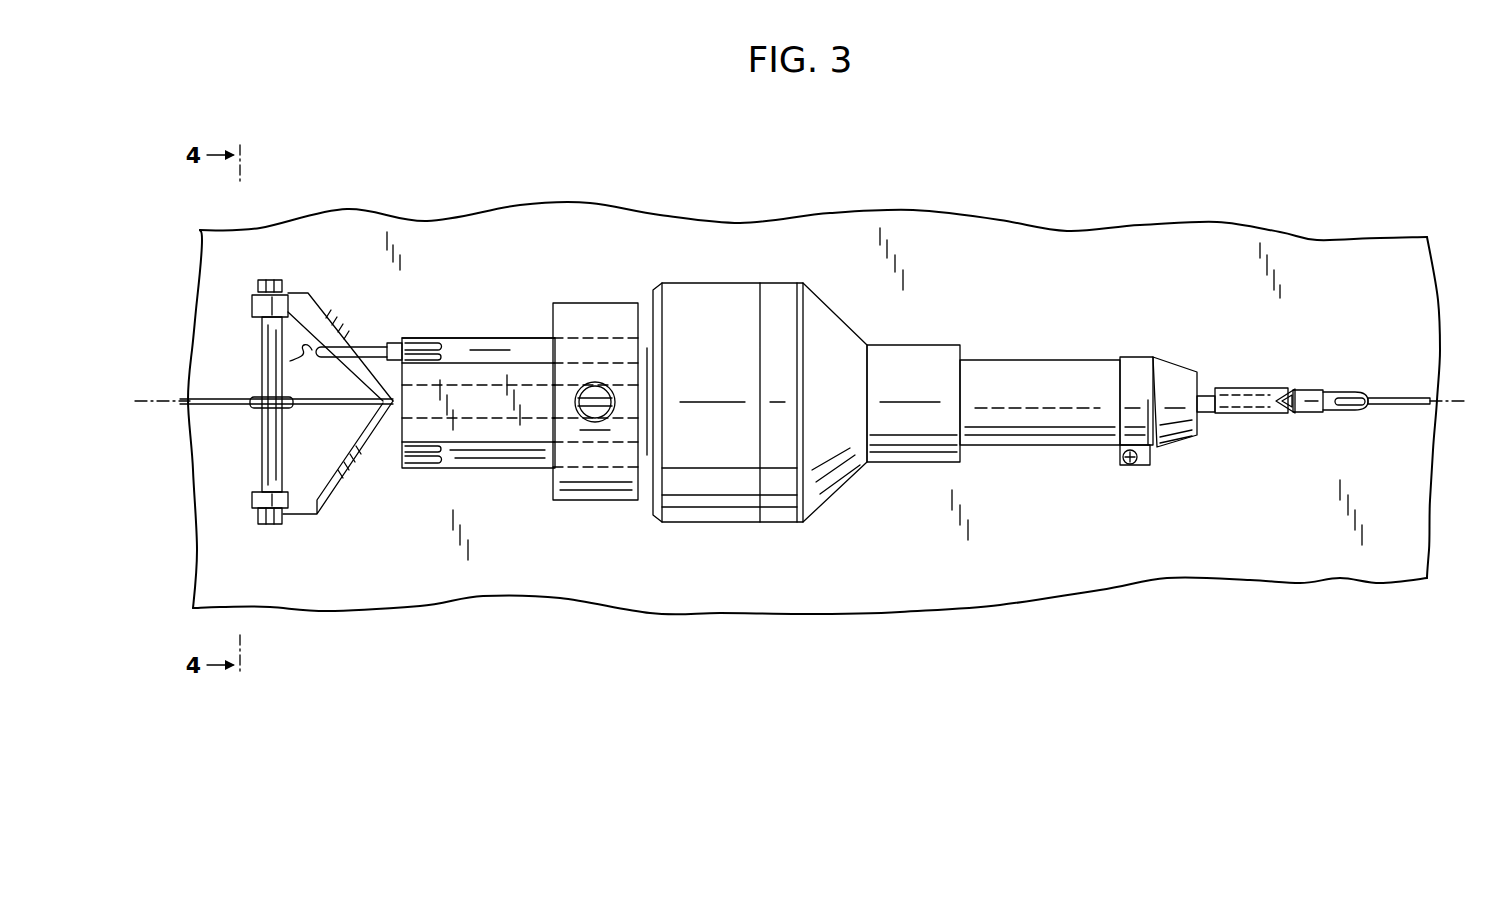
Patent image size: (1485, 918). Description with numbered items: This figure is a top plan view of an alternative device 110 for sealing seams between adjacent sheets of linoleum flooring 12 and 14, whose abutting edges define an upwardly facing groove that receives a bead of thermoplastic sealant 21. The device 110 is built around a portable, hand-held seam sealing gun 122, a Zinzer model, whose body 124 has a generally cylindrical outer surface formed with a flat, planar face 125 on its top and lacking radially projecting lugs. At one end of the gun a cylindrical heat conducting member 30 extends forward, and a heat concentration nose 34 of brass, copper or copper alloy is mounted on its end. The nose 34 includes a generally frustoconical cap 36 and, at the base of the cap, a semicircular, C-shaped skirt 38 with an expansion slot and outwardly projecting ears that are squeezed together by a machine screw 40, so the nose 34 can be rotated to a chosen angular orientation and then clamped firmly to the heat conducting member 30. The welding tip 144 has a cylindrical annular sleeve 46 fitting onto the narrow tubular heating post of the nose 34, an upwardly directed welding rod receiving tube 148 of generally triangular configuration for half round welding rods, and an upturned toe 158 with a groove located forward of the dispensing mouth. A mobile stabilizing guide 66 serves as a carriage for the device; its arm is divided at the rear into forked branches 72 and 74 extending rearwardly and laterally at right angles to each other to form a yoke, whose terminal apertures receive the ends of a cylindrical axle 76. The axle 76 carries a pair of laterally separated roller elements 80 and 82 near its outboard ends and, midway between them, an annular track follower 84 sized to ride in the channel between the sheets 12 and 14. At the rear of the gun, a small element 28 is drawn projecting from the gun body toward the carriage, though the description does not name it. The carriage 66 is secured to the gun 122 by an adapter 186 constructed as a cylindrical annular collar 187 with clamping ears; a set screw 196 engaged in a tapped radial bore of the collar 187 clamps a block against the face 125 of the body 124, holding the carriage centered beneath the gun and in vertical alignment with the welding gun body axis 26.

The linoleum flooring sheet 12 is at (1168, 248).
The linoleum flooring sheet 14 is at (1173, 562).
The bead of thermoplastic sealant 21 is at (1400, 400).
The welding gun body axis 26 is at (160, 401).
The pin 28 is at (382, 348).
The heat conducting member 30 is at (1060, 372).
The heat concentration nose 34 is at (1195, 392).
The cap 36 is at (1172, 437).
The skirt 38 is at (1133, 362).
The machine screw 40 is at (1127, 465).
The cylindrical annular sleeve 46 is at (1243, 400).
The stabilizing guide 66 is at (356, 399).
The forked branch 72 is at (317, 507).
The forked branch 74 is at (310, 297).
The cylindrical axle 76 is at (262, 340).
The roller element 80 is at (252, 500).
The roller element 82 is at (252, 302).
The track follower 84 is at (250, 405).
The alternative seam sealing device 110 is at (797, 343).
The seam sealing gun 122 is at (693, 277).
The gun body 124 is at (495, 338).
The flat planar face 125 is at (470, 372).
The welding tip 144 is at (1300, 377).
The welding rod receiving tube 148 is at (1280, 395).
The upturned toe 158 is at (1365, 410).
The adapter 186 is at (588, 404).
The annular collar 187 is at (580, 490).
The set screw 196 is at (594, 422).